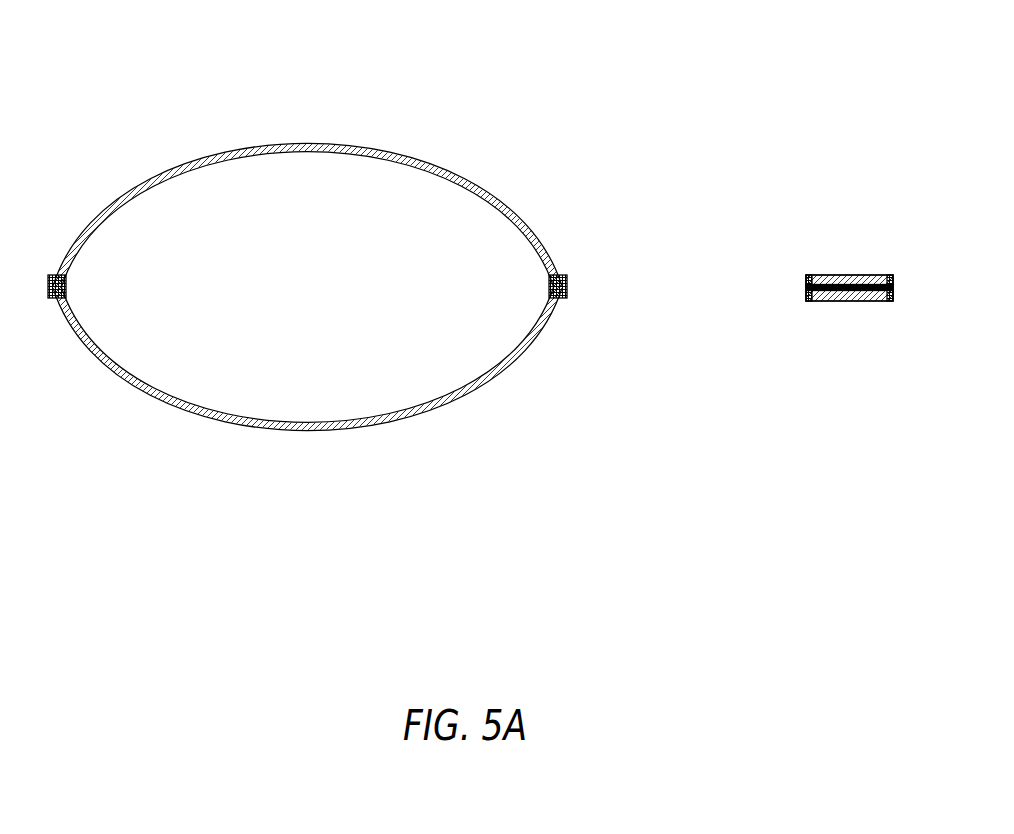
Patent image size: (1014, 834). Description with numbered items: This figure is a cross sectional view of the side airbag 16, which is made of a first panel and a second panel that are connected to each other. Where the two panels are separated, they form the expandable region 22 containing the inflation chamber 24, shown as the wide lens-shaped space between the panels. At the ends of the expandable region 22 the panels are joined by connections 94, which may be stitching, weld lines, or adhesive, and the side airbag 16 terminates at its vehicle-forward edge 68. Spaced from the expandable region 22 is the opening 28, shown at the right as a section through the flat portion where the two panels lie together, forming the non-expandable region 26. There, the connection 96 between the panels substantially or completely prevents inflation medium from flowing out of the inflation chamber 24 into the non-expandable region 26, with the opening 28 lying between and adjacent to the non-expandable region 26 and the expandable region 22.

The side airbag 16 is at (302, 270).
The expandable region 22 is at (307, 290).
The inflation chamber 24 is at (307, 290).
The non-expandable region 26 is at (851, 290).
The opening 28 is at (789, 274).
The vehicle-forward edge 68 is at (50, 287).
The connections 94 is at (302, 300).
The connection 96 is at (810, 301).